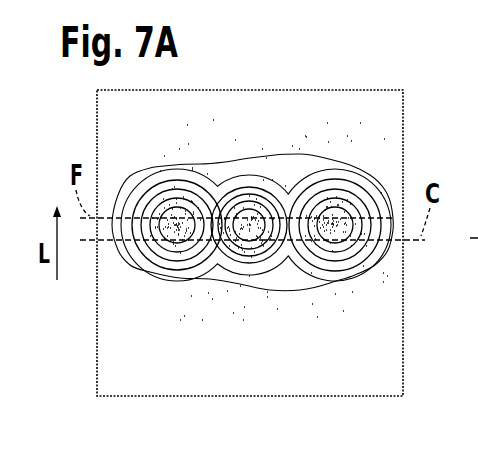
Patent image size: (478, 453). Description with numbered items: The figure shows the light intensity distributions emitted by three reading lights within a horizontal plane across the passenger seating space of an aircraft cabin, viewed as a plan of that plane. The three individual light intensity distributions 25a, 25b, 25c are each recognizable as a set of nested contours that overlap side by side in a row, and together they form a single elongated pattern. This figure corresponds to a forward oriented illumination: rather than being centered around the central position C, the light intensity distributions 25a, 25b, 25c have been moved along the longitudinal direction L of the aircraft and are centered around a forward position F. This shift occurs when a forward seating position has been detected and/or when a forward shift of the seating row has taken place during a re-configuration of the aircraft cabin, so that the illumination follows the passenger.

The light intensity distribution 25a is at (128, 268).
The light intensity distribution 25b is at (268, 156).
The light intensity distribution 25c is at (364, 158).